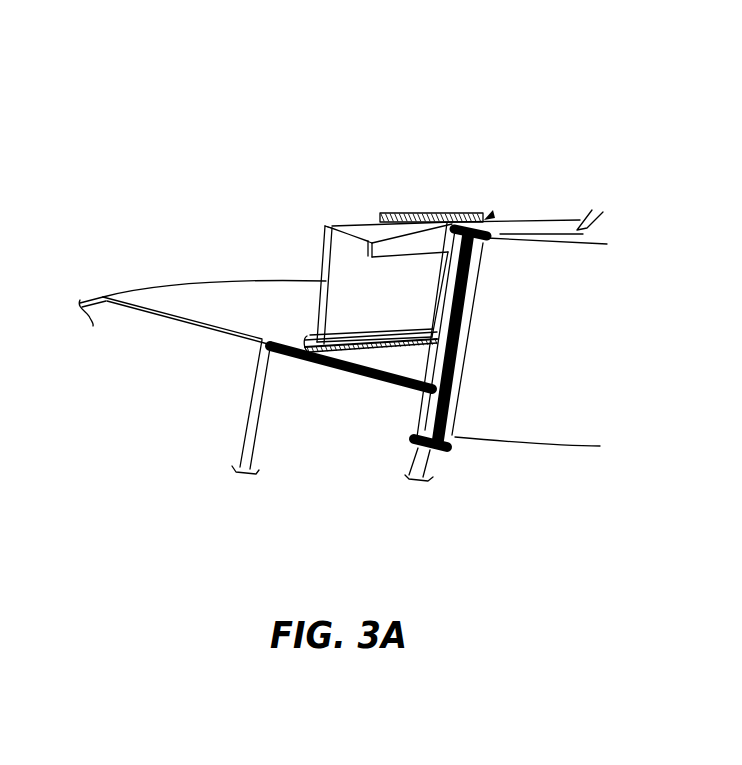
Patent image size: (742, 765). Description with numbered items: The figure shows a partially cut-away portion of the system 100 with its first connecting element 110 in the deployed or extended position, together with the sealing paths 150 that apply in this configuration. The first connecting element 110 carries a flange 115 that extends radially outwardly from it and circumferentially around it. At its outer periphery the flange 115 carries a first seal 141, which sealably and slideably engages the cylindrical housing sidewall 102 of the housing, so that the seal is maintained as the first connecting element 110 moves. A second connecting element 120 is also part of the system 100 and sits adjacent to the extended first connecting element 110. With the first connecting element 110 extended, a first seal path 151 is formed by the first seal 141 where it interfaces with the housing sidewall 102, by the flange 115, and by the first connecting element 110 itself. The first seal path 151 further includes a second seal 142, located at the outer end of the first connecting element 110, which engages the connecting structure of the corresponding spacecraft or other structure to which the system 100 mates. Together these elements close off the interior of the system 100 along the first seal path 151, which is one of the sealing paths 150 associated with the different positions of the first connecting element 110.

The system 100 is at (170, 158).
The housing sidewall 102 is at (262, 386).
The first connecting element 110 is at (582, 287).
The flange 115 is at (413, 358).
The second connecting element 120 is at (328, 272).
The first seal 141 is at (273, 350).
The second seal 142 is at (513, 226).
The sealing paths 150 is at (140, 230).
The first seal path 151 is at (375, 381).